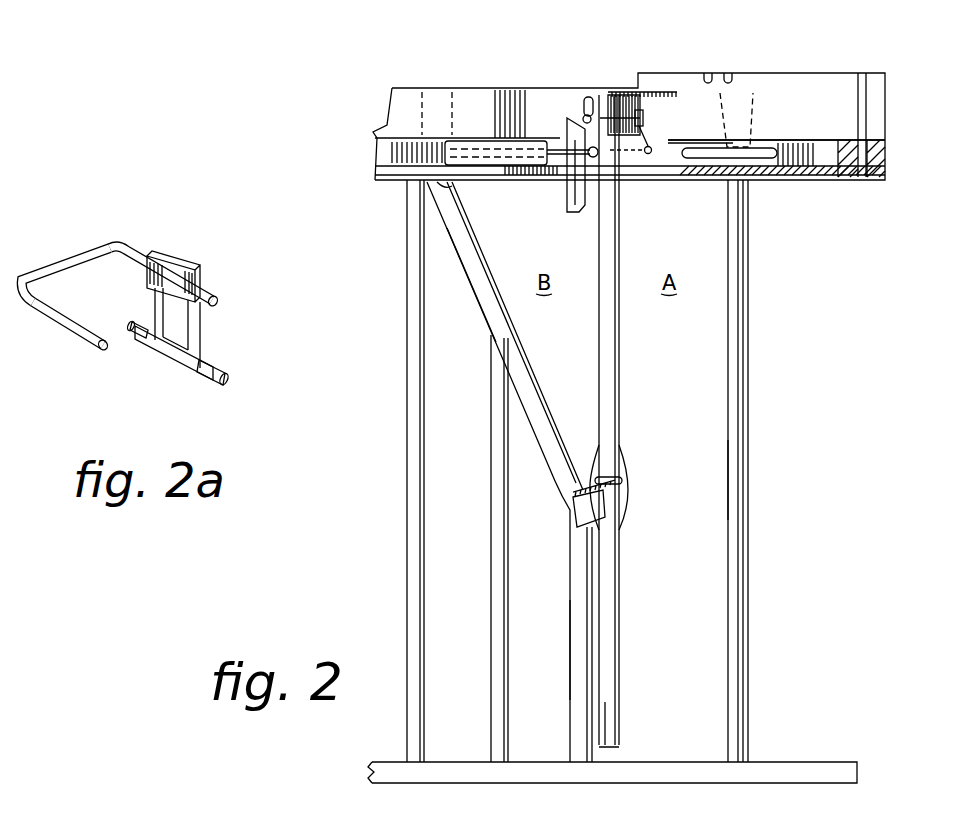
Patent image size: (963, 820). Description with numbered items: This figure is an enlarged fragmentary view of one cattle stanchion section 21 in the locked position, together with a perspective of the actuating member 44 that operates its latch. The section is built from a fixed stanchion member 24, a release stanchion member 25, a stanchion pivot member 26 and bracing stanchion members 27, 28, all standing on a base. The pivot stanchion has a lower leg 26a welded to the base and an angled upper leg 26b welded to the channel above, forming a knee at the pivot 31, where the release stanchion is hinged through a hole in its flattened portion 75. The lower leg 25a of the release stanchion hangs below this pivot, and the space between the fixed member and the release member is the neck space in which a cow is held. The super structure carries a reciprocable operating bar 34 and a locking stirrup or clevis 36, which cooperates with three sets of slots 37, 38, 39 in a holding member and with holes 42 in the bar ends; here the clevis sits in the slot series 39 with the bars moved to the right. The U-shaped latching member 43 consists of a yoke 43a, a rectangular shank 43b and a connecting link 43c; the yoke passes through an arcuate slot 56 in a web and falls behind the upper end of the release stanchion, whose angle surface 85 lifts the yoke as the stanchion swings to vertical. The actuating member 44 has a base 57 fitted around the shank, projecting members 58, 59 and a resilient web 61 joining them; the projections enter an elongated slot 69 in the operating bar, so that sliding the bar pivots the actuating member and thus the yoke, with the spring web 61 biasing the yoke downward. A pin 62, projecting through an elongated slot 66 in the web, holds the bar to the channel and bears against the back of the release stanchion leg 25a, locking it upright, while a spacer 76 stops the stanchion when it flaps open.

In FIG. 2, the stanchion section 21 is at (749, 445).
In FIG. 2, the fixed stanchion member 24 is at (749, 330).
In FIG. 2, the release stanchion member 25 is at (620, 253).
In FIG. 2, the leg of release stanchion 25a is at (621, 348).
In FIG. 2, the stanchion pivot member 26 is at (546, 466).
In FIG. 2, the lower leg of pivot stanchion 26a is at (570, 673).
In FIG. 2, the upper leg of pivot stanchion 26b is at (530, 365).
In FIG. 2, the bracing stanchion member 27 is at (490, 525).
In FIG. 2, the bracing stanchion member 28 is at (425, 450).
In FIG. 2, the pivot 31 is at (628, 486).
In FIG. 2, the operating bar 34 is at (823, 157).
In FIG. 2, the locking stirrup or clevis 36 is at (860, 73).
In FIG. 2, the slots 37 is at (708, 72).
In FIG. 2, the slots 38 is at (728, 72).
In FIG. 2, the slots 39 is at (866, 82).
In FIG. 2, the holes 42 is at (876, 142).
In FIG. 2A, the latching member 43 is at (121, 297).
In FIG. 2, the yoke 43a is at (586, 115).
In FIG. 2A, the yoke 43a is at (65, 335).
In FIG. 2A, the shank 43b is at (147, 247).
In FIG. 2A, the connecting link 43c is at (97, 247).
In FIG. 2A, the actuating member 44 is at (207, 322).
In FIG. 2, the arcuate slot 56 is at (590, 96).
In FIG. 2A, the base 57 is at (186, 272).
In FIG. 2A, the projecting member 58 is at (138, 343).
In FIG. 2A, the projecting member 59 is at (213, 375).
In FIG. 2A, the web 61 is at (205, 343).
In FIG. 2, the pin 62 is at (590, 160).
In FIG. 2, the elongated slot 66 is at (572, 158).
In FIG. 2, the elongated slot 69 is at (765, 165).
In FIG. 2, the flattened portion 75 is at (622, 468).
In FIG. 2, the spacer 76 is at (442, 185).
In FIG. 2, the angle surface 85 is at (617, 95).